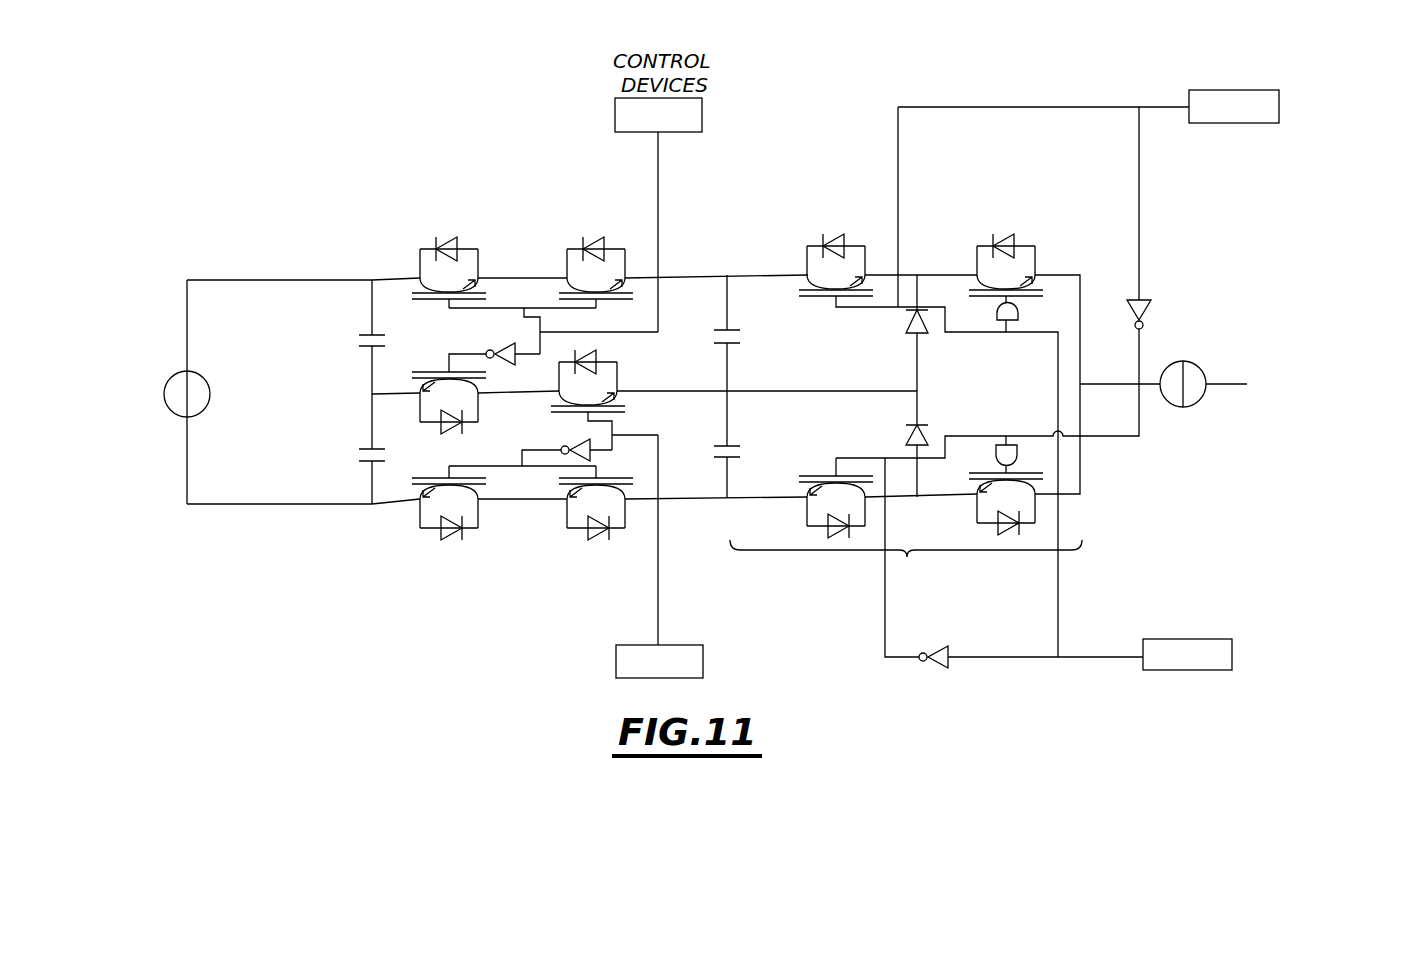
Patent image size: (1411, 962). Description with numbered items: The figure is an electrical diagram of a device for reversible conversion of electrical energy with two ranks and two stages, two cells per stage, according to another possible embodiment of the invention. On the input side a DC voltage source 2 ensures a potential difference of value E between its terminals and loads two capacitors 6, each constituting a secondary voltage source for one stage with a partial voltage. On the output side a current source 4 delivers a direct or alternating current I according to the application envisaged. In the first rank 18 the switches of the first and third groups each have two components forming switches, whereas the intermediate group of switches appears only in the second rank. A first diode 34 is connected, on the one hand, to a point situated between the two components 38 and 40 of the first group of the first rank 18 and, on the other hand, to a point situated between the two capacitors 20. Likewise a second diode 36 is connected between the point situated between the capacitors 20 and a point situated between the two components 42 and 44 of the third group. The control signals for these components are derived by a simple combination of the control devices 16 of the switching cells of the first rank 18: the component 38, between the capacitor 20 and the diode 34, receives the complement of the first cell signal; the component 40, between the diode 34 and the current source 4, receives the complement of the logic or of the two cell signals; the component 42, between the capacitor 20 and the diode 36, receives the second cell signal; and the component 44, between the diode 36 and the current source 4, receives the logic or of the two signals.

The DC voltage source 2 is at (160, 413).
The current source 4 is at (1201, 356).
The capacitors 6 is at (350, 455).
The control devices 16 is at (1170, 728).
The first rank 18 is at (906, 572).
The capacitors 20 is at (705, 590).
The first diode 34 is at (942, 428).
The second diode 36 is at (922, 306).
The component 38 is at (815, 541).
The component 40 is at (1052, 508).
The component 42 is at (855, 236).
The component 44 is at (1030, 237).